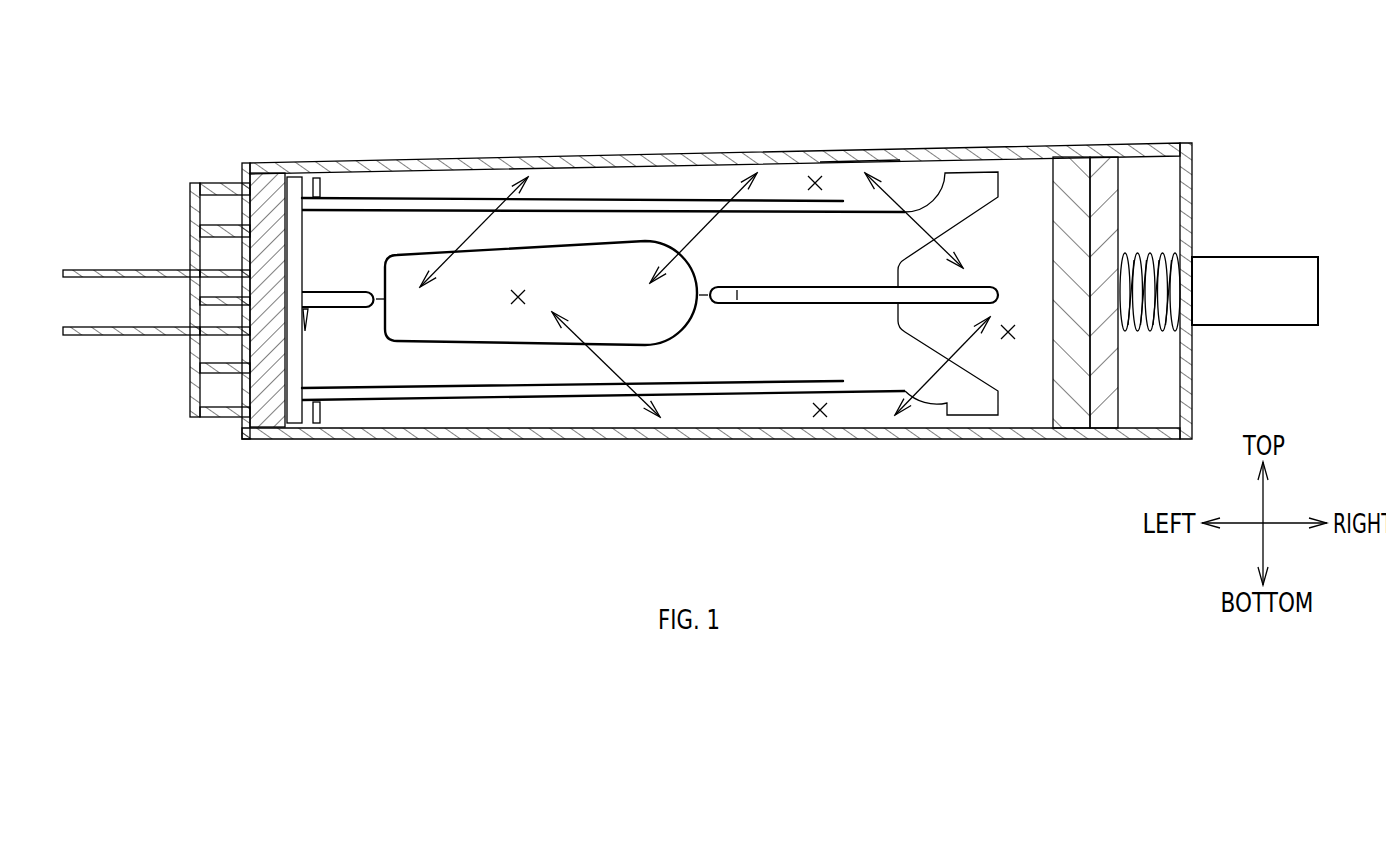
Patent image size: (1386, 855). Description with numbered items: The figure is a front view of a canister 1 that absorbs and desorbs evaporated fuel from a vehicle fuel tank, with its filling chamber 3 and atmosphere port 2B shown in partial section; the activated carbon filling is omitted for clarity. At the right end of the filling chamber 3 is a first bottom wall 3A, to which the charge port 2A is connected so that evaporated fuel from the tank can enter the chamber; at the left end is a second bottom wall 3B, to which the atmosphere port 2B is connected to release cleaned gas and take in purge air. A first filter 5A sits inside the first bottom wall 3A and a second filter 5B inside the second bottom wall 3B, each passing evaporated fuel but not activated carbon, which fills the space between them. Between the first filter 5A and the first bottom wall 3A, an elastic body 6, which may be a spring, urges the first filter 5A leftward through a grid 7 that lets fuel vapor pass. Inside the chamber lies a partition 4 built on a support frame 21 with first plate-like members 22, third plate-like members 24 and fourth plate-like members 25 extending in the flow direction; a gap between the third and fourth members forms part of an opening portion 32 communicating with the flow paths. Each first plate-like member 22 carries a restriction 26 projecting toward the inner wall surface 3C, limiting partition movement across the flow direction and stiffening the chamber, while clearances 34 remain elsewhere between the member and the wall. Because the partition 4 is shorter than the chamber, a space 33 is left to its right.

The canister 1 is at (1240, 104).
The charge port 2A is at (1287, 270).
The atmosphere port 2B is at (106, 268).
The filling chamber 3 is at (913, 146).
The first bottom wall 3A is at (1185, 192).
The second bottom wall 3B is at (195, 222).
The inner wall surface 3C is at (878, 160).
The partition 4 is at (680, 196).
The first filter 5A is at (1068, 157).
The second filter 5B is at (268, 172).
The elastic body 6 is at (1161, 254).
The grid 7 is at (1096, 157).
The support frame 21 is at (297, 408).
The first plate-like member 22 is at (417, 222).
The third plate-like member 24 is at (800, 294).
The fourth plate-like member 25 is at (341, 302).
The restriction 26 is at (973, 182).
The opening portion 32 is at (519, 290).
The space 33 is at (1016, 331).
The clearances 34 is at (815, 178).